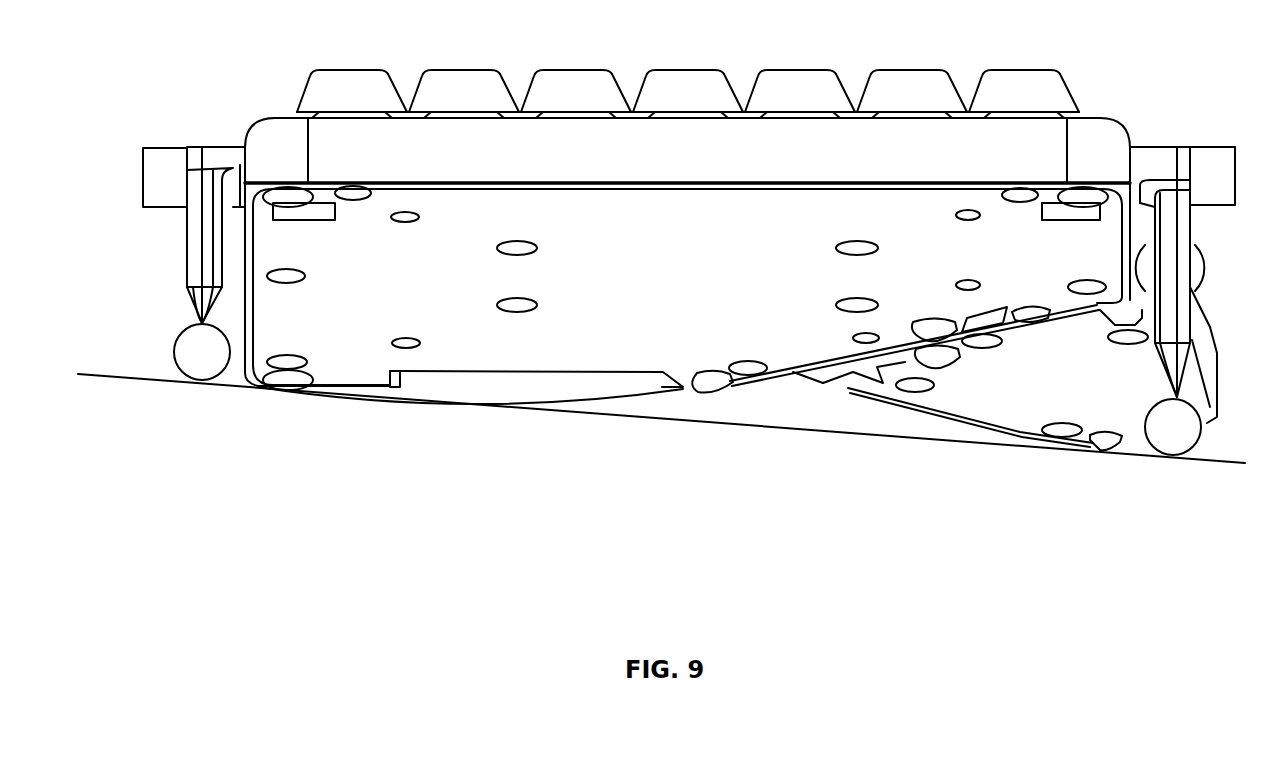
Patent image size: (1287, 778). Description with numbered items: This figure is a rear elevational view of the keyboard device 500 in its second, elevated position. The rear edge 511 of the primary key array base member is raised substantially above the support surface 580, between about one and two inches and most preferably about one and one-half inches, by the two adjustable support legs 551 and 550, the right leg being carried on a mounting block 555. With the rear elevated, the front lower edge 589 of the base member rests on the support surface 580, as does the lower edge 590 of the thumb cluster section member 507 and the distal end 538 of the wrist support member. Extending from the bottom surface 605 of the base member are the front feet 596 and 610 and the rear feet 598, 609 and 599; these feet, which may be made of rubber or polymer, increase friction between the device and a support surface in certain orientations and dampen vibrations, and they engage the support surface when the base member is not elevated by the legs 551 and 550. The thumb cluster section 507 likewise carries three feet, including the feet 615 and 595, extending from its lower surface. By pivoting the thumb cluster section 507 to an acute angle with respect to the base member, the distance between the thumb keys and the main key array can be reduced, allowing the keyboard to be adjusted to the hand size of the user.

The keyboard 500 is at (280, 108).
The bottom surface 605 is at (578, 231).
The mounting block 555 is at (1222, 147).
The leg 550 is at (1182, 237).
The leg 551 is at (205, 240).
The rear foot 598 is at (297, 208).
The rear foot 599 is at (1090, 200).
The rear foot 609 is at (932, 328).
The front foot 610 is at (718, 372).
The front foot 596 is at (288, 380).
The front lower edge 589 is at (325, 388).
The distal end 538 is at (470, 405).
The rear edge 511 is at (668, 162).
The support surface 580 is at (748, 430).
The foot 615 is at (938, 355).
The thumb cluster section member 507 is at (1000, 388).
The lower edge 590 is at (1078, 462).
The foot 595 is at (1108, 445).